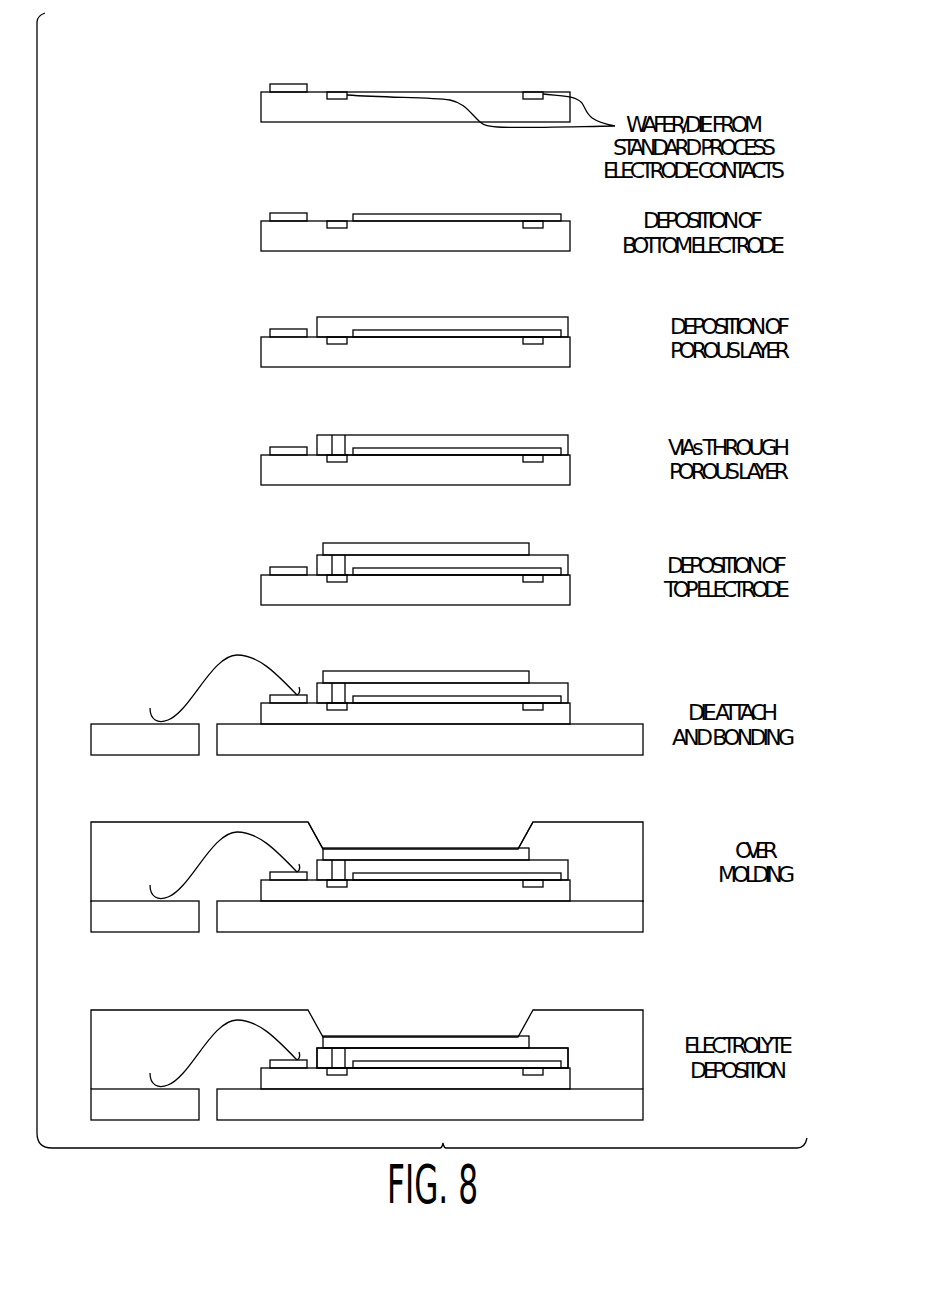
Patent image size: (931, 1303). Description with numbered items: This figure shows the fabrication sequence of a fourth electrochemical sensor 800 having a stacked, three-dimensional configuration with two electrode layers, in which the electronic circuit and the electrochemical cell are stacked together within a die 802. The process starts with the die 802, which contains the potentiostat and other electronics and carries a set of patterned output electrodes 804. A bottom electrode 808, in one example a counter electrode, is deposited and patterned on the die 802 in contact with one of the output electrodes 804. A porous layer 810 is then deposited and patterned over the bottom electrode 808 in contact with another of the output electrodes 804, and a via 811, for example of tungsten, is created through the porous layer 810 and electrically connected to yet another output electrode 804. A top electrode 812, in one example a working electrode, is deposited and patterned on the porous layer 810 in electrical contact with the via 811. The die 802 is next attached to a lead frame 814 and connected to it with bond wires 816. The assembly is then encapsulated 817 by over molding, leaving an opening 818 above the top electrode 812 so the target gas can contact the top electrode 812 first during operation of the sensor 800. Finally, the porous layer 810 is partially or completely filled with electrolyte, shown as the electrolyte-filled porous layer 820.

The fourth electrochemical sensor 800 is at (346, 679).
The die 802 is at (270, 106).
The set of output electrodes 804 is at (287, 83).
The bottom electrode 808 is at (420, 213).
The porous layer 810 is at (425, 316).
The via 811 is at (338, 438).
The top electrode 812 is at (340, 544).
The lead frame 814 is at (100, 742).
The bond wires 816 is at (205, 676).
The encapsulation 817 is at (102, 841).
The opening 818 is at (405, 826).
The porous layer with electrolyte 820 is at (551, 1053).